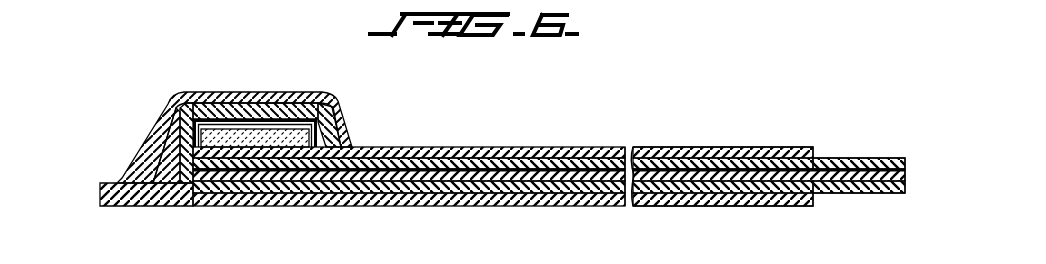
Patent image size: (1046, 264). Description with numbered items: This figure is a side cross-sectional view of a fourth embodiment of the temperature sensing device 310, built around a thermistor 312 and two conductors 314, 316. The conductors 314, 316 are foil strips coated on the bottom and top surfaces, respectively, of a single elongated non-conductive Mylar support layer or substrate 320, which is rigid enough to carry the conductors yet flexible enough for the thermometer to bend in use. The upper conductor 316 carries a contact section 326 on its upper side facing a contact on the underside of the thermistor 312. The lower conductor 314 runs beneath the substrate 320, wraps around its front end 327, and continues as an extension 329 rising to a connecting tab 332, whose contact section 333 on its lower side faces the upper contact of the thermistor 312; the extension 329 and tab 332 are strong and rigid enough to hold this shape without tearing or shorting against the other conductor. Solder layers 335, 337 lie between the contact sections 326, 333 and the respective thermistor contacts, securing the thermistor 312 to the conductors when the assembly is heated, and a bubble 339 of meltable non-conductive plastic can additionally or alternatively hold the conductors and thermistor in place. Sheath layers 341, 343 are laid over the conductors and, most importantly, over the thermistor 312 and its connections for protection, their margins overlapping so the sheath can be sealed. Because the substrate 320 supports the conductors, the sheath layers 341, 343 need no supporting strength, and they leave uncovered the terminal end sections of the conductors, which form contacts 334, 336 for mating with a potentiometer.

The temperature sensing device 310 is at (237, 99).
The thermistor 312 is at (178, 130).
The conductor 314 is at (427, 186).
The conductor 316 is at (658, 147).
The support layer or substrate 320 is at (503, 172).
The contact section 326 is at (268, 157).
The front end 327 is at (200, 183).
The extension 329 is at (178, 168).
The connecting tab 332 is at (252, 120).
The contact section 333 is at (288, 124).
The contact 334 is at (850, 196).
The solder layer 335 is at (340, 143).
The contact 336 is at (880, 130).
The solder layer 337 is at (333, 112).
The bubble 339 is at (212, 98).
The sheath layer 341 is at (347, 192).
The sheath layer 343 is at (507, 128).